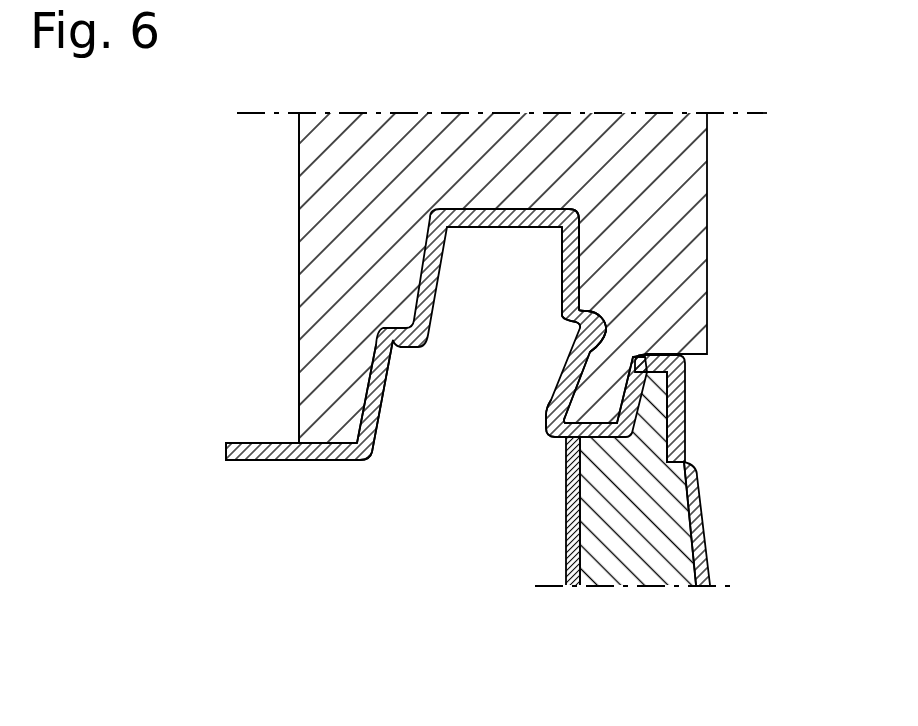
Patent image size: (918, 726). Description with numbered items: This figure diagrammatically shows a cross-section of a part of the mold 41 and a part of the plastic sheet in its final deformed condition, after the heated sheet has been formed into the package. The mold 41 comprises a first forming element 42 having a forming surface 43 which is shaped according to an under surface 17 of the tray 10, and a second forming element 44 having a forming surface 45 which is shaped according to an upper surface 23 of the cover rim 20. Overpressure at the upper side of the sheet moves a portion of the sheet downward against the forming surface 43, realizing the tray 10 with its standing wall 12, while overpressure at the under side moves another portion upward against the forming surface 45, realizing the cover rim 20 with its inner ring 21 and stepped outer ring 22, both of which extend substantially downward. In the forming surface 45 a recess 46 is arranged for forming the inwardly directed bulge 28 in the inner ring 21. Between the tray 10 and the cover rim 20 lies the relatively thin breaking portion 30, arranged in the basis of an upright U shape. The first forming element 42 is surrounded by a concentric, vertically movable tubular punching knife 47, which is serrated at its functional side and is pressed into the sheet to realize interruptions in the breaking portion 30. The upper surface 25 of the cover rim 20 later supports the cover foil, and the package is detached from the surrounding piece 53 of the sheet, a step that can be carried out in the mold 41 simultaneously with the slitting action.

The tray 10 is at (678, 440).
The standing wall 12 is at (702, 552).
The under surface 17 is at (688, 537).
The cover rim 20 is at (427, 305).
The inner ring 21 is at (565, 262).
The outer ring 22 is at (380, 393).
The upper surface 23 is at (552, 207).
The upper surface 25 is at (508, 209).
The bulge 28 is at (603, 300).
The breaking portion 30 is at (568, 420).
The mold 41 is at (267, 200).
The first forming element 42 is at (608, 580).
The forming surface 43 is at (680, 413).
The second forming element 44 is at (298, 290).
The forming surface 45 is at (485, 227).
The recess 46 is at (598, 335).
The punching knife 47 is at (566, 553).
The piece 53 is at (252, 461).